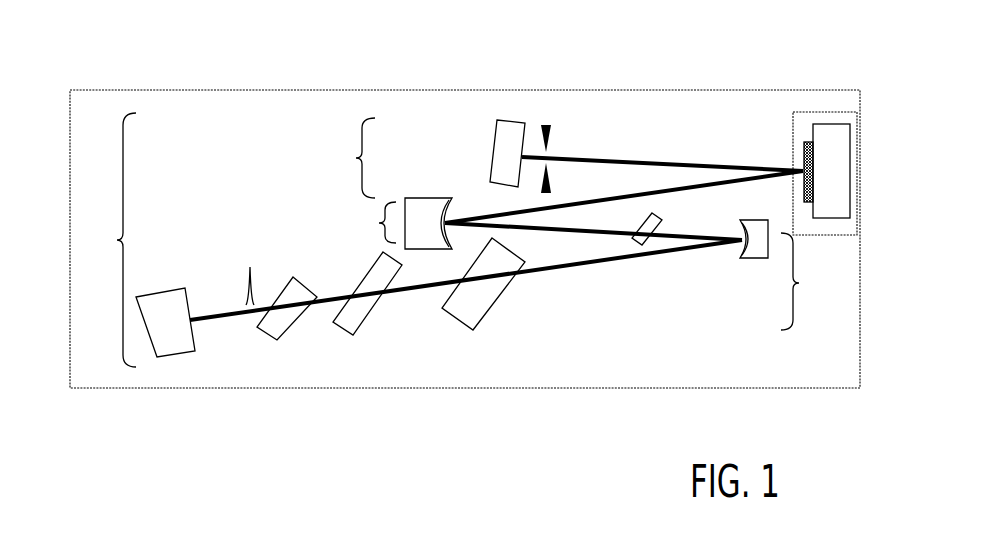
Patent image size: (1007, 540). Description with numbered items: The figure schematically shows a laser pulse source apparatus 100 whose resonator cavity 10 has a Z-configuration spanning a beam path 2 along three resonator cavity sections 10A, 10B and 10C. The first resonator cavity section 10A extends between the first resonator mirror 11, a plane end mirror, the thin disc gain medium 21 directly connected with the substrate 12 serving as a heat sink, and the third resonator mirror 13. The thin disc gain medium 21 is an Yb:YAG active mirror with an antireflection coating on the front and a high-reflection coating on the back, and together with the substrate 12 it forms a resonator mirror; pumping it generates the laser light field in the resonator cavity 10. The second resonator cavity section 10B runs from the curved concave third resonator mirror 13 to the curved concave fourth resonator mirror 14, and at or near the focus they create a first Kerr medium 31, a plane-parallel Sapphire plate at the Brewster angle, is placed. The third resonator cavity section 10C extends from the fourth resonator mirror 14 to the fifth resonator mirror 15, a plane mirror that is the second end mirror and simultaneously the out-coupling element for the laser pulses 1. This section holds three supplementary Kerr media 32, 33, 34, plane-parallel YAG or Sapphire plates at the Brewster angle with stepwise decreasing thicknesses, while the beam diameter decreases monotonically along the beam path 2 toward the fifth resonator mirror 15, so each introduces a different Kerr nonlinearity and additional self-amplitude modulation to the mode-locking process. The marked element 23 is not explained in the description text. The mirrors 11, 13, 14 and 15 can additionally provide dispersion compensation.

The laser pulse source apparatus 100 is at (155, 65).
The resonator cavity 10 is at (100, 256).
The first resonator cavity section 10A is at (342, 158).
The second resonator cavity section 10B is at (368, 236).
The third resonator cavity section 10C is at (850, 302).
The laser pulses 1 is at (257, 278).
The beam path 2 is at (537, 281).
The first resonator mirror 11 is at (505, 158).
The substrate 12 is at (825, 135).
The third resonator mirror 13 is at (428, 212).
The fourth resonator mirror 14 is at (758, 247).
The fifth resonator mirror 15 is at (162, 302).
The thin disc gain medium 21 is at (807, 150).
The beam adjustment direction arrows 23 is at (553, 123).
The first Kerr medium 31 is at (625, 252).
The supplementary Kerr medium 32 is at (465, 305).
The supplementary Kerr medium 33 is at (363, 303).
The supplementary Kerr medium 34 is at (283, 325).